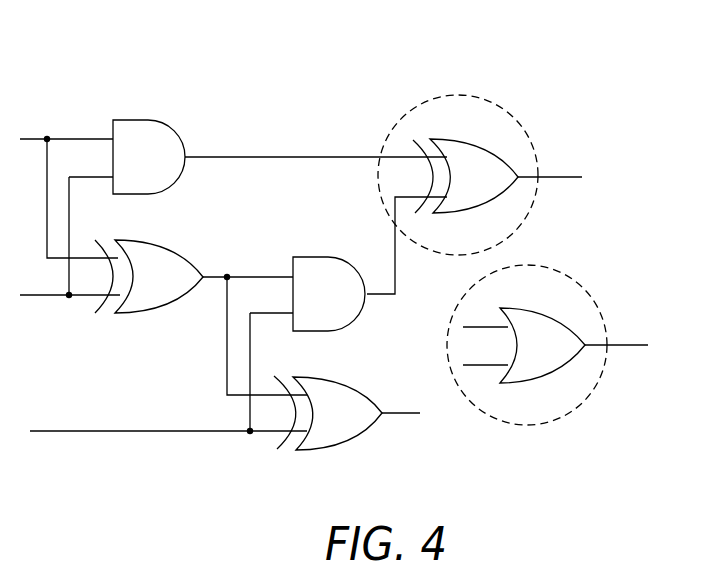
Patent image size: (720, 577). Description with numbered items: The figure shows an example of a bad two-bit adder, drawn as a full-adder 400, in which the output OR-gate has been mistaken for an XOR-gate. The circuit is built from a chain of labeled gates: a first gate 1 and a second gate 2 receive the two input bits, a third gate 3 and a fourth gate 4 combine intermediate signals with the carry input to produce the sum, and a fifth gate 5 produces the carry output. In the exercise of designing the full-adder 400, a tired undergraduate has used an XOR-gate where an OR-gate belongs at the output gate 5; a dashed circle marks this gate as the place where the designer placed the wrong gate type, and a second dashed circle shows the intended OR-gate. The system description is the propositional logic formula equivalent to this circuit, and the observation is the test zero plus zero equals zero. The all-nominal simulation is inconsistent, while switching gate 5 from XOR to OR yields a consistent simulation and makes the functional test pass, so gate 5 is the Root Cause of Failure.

The full-adder 400 is at (239, 78).
The AND gate f1 1 is at (149, 157).
The XOR gate f2 2 is at (149, 276).
The AND gate f3 3 is at (329, 294).
The XOR gate f4 4 is at (328, 413).
The gate f5 5 is at (499, 261).